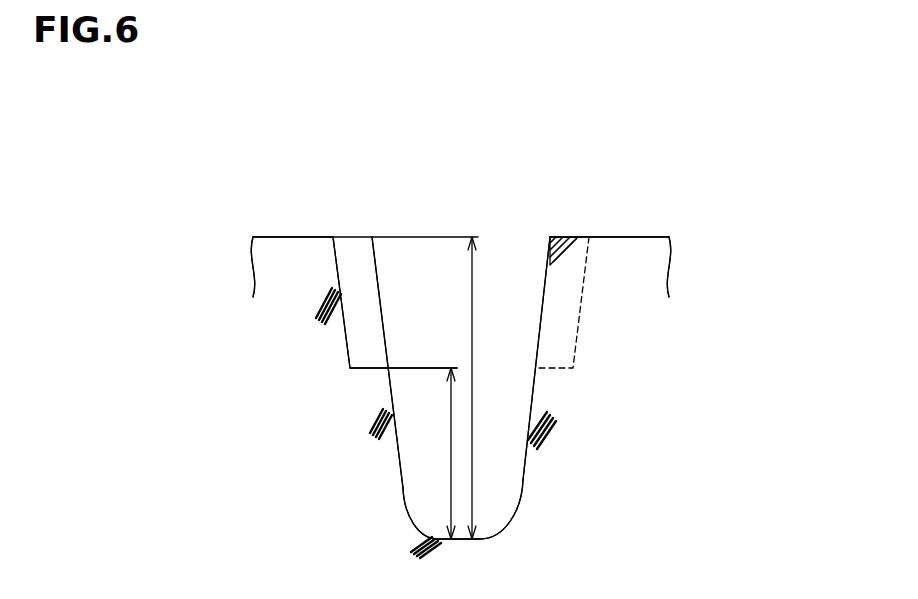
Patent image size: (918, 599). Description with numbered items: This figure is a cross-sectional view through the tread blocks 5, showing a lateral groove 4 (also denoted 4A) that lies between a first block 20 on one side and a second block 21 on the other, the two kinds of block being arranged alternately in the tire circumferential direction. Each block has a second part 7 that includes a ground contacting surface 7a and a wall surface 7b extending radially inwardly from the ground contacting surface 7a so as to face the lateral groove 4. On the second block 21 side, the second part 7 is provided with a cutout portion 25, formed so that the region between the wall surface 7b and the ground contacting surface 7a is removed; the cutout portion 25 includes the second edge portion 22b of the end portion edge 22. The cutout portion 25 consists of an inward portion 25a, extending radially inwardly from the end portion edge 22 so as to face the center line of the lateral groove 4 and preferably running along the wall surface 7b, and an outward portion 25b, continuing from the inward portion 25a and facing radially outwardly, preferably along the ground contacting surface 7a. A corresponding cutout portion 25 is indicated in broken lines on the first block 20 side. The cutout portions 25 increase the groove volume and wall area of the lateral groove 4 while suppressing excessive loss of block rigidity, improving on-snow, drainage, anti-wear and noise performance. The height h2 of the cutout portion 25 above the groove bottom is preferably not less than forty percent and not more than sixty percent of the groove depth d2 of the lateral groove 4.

The lateral groove 4 is at (437, 328).
The groove 4A is at (503, 265).
The block 5 is at (489, 293).
The first block 20 is at (610, 237).
The second block 21 is at (293, 237).
The end portion edge 22 is at (374, 313).
The second edge portion 22b is at (333, 237).
The second part 7 is at (462, 364).
The ground contacting surface 7a is at (270, 237).
The wall surface 7b is at (403, 476).
The cutout portion 25 is at (178, 315).
The inward portion 25a is at (340, 283).
The outward portion 25b is at (370, 368).
The groove depth d2 is at (489, 388).
The height h2 is at (451, 432).